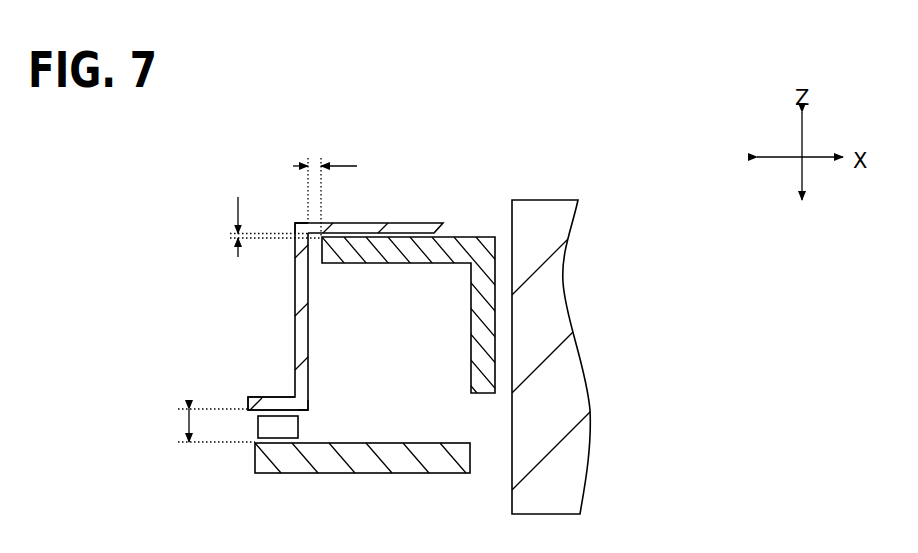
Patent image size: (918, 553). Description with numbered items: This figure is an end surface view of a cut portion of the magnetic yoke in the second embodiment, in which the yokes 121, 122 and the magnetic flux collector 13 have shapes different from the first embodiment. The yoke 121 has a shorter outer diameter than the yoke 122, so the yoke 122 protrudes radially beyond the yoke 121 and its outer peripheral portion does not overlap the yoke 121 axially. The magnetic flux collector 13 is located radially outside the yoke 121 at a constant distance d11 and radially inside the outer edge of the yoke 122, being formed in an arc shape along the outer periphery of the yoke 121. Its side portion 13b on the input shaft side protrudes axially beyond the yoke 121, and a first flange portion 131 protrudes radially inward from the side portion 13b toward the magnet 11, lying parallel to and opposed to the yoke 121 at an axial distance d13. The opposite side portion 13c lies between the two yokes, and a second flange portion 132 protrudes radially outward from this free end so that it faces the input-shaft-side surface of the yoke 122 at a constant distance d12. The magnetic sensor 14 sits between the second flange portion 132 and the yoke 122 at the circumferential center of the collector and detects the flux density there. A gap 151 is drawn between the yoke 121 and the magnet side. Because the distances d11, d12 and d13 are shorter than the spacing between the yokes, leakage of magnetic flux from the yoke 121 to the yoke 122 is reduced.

The magnet 11 is at (540, 212).
The magnetic flux collector 13 is at (302, 288).
The side portion on the input shaft side 13b is at (302, 221).
The side portion on the output shaft side 13c is at (308, 410).
The first flange portion 131 is at (402, 221).
The second flange portion 132 is at (260, 397).
The magnetic sensor 14 is at (258, 427).
The yoke 121 is at (463, 243).
The yoke 122 is at (408, 460).
The gap 151 is at (498, 272).
The distance d11 is at (334, 190).
The distance d12 is at (197, 425).
The distance d13 is at (257, 227).